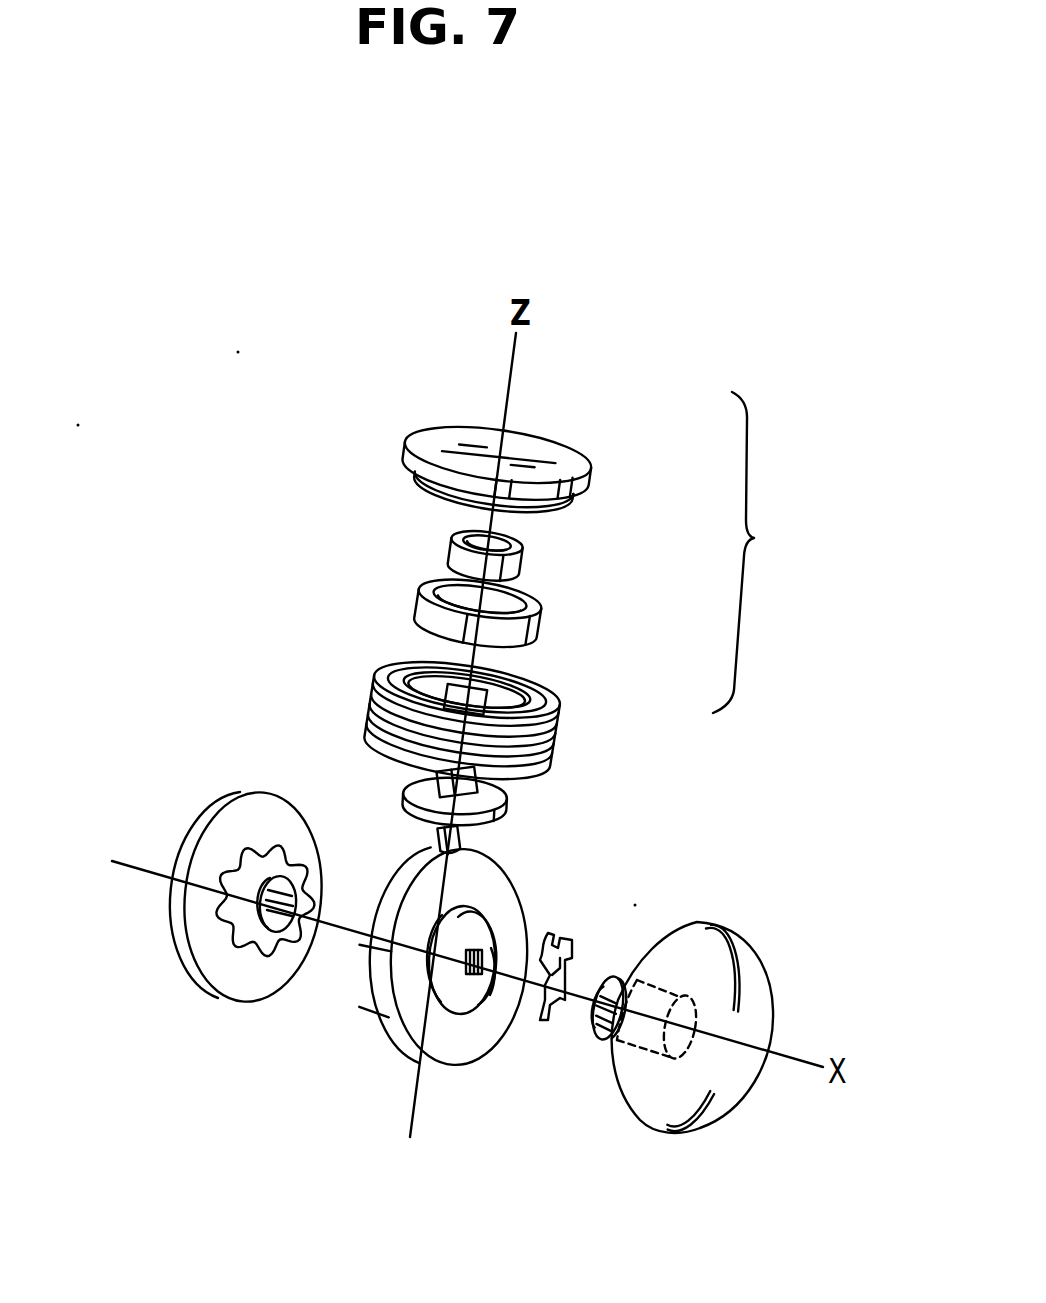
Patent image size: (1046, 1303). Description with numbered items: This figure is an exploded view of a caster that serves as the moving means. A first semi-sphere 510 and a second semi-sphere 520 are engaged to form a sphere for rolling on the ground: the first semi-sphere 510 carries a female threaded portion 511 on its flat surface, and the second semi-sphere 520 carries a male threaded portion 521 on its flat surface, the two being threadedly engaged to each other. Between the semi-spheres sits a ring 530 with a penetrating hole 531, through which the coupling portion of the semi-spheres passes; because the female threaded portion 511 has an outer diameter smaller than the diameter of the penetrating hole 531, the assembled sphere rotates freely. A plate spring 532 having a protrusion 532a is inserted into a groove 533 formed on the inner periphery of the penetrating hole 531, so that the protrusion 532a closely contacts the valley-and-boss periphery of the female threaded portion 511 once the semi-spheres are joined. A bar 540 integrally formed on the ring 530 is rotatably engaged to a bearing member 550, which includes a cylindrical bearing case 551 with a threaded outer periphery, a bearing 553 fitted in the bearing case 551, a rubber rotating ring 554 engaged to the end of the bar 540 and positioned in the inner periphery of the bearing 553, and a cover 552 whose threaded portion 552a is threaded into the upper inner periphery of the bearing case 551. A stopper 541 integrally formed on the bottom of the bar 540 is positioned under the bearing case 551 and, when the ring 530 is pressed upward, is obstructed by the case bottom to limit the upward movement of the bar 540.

The first semi-sphere 510 is at (223, 837).
The female threaded portion 511 is at (230, 947).
The second semi-sphere 520 is at (745, 967).
The male threaded portion 521 is at (594, 1043).
The ring 530 is at (370, 948).
The penetrating hole 531 is at (445, 997).
The plate spring 532 is at (553, 1022).
The protrusion 532a is at (548, 970).
The groove 533 is at (490, 1020).
The bar 540 is at (462, 850).
The stopper 541 is at (503, 813).
The bearing member 550 is at (764, 552).
The bearing case 551 is at (557, 735).
The cover 552 is at (577, 462).
The threaded portion 552a is at (567, 510).
The bearing 553 is at (542, 620).
The rotating ring 554 is at (523, 555).